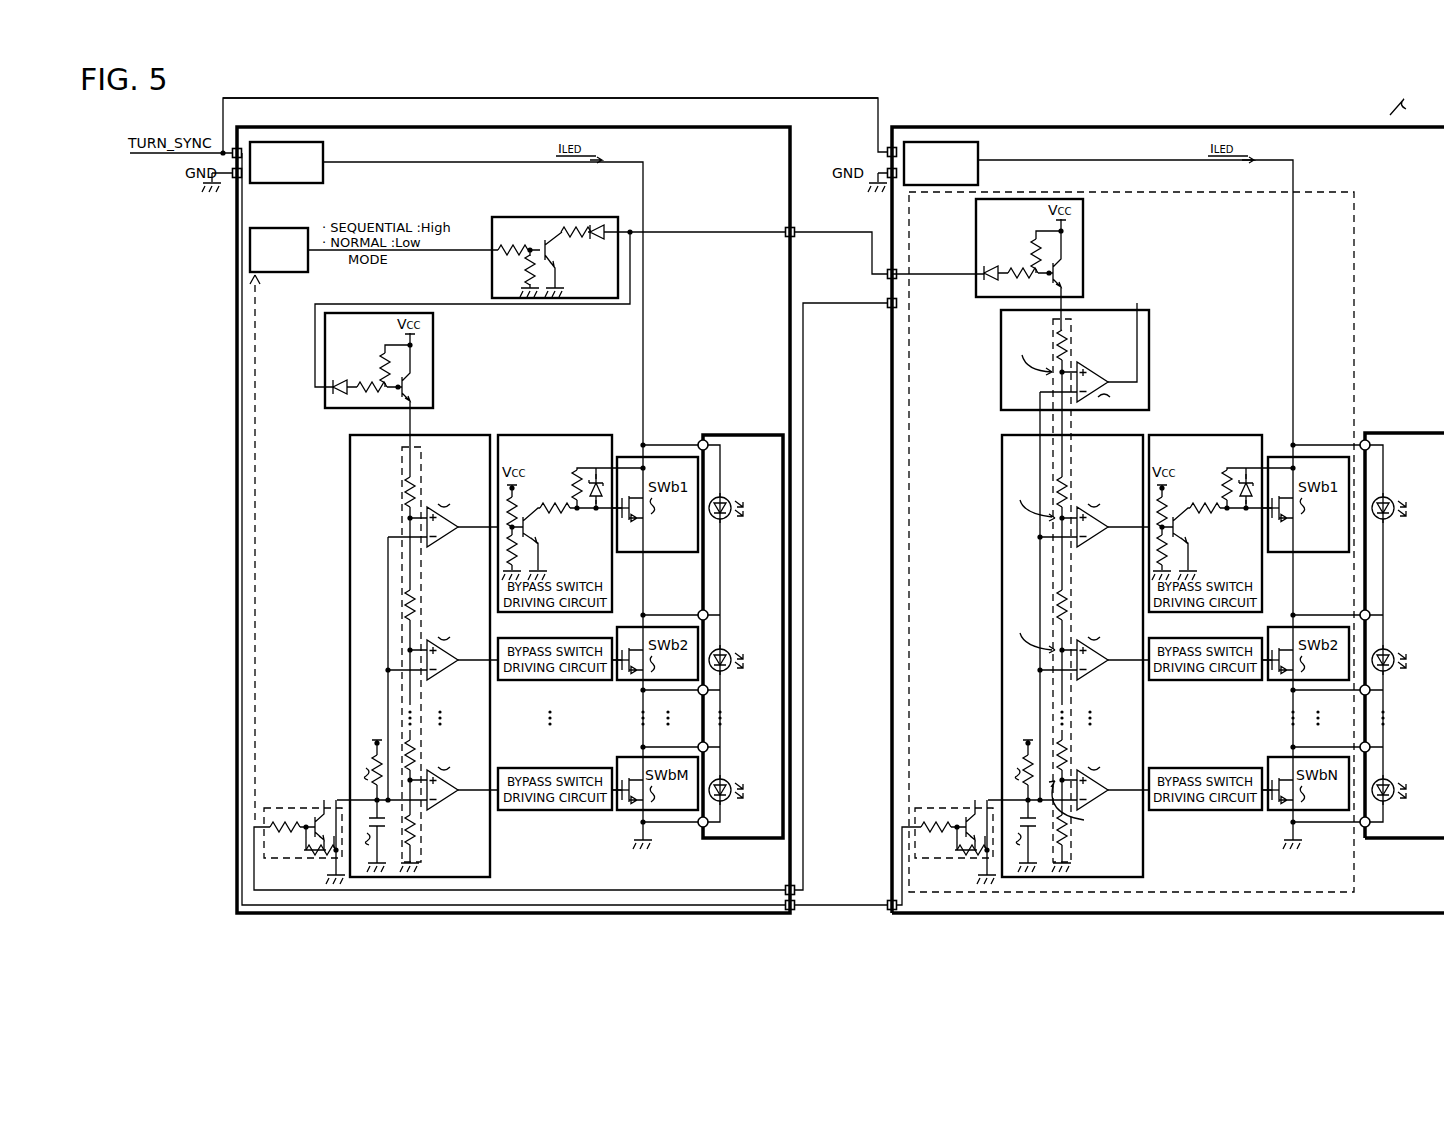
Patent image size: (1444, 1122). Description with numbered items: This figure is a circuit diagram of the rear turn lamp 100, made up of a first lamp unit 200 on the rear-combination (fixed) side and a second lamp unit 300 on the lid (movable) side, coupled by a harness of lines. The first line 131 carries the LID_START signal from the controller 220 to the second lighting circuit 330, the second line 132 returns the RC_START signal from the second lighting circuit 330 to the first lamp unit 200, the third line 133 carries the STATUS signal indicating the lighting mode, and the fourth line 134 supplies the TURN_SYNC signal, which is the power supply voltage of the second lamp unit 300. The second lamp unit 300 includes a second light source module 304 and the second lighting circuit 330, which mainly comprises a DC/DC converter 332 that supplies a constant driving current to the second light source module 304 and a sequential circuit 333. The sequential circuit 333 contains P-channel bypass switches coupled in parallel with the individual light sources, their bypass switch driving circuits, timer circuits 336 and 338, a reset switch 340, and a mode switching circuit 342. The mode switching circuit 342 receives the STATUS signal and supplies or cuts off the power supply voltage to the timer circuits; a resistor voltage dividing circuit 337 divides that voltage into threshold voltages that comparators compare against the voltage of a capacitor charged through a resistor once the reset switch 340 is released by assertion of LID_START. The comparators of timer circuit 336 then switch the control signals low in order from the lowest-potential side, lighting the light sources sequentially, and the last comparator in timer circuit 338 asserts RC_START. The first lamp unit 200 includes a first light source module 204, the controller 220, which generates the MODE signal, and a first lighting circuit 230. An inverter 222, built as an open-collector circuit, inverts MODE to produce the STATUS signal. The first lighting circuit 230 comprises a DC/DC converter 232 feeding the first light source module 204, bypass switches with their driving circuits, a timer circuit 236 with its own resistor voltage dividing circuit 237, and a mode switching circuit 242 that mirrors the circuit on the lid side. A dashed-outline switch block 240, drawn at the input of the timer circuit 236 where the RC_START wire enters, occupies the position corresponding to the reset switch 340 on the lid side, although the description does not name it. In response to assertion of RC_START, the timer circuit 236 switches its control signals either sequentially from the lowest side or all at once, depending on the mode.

The rear turn lamp 100 is at (1440, 99).
The first line 131 is at (849, 912).
The second line 132 is at (828, 303).
The third line 133 is at (839, 256).
The fourth line 134 is at (826, 100).
The first lamp unit 200 is at (530, 915).
The first light source module 204 is at (740, 619).
The controller 220 is at (278, 226).
The inverter 222 is at (553, 213).
The first lighting circuit 230 is at (711, 173).
The DC/DC converter 232 is at (328, 158).
The timer circuit 236 is at (444, 642).
The resistor voltage dividing circuit 237 is at (423, 462).
The photocoupler (LID start input) 240 is at (310, 804).
The mode switching circuit 242 is at (433, 357).
The second lamp unit 300 is at (1210, 915).
The second light source module 304 is at (1402, 618).
The second lighting circuit 330 is at (1366, 175).
The DC/DC converter 332 is at (983, 158).
The sequential circuit 333 is at (1356, 284).
The timer circuit 336 is at (1068, 596).
The resistor voltage dividing circuit 337 is at (1074, 325).
The timer circuit 338 is at (1152, 368).
The reset switch 340 is at (961, 804).
The mode switching circuit 342 is at (1085, 240).